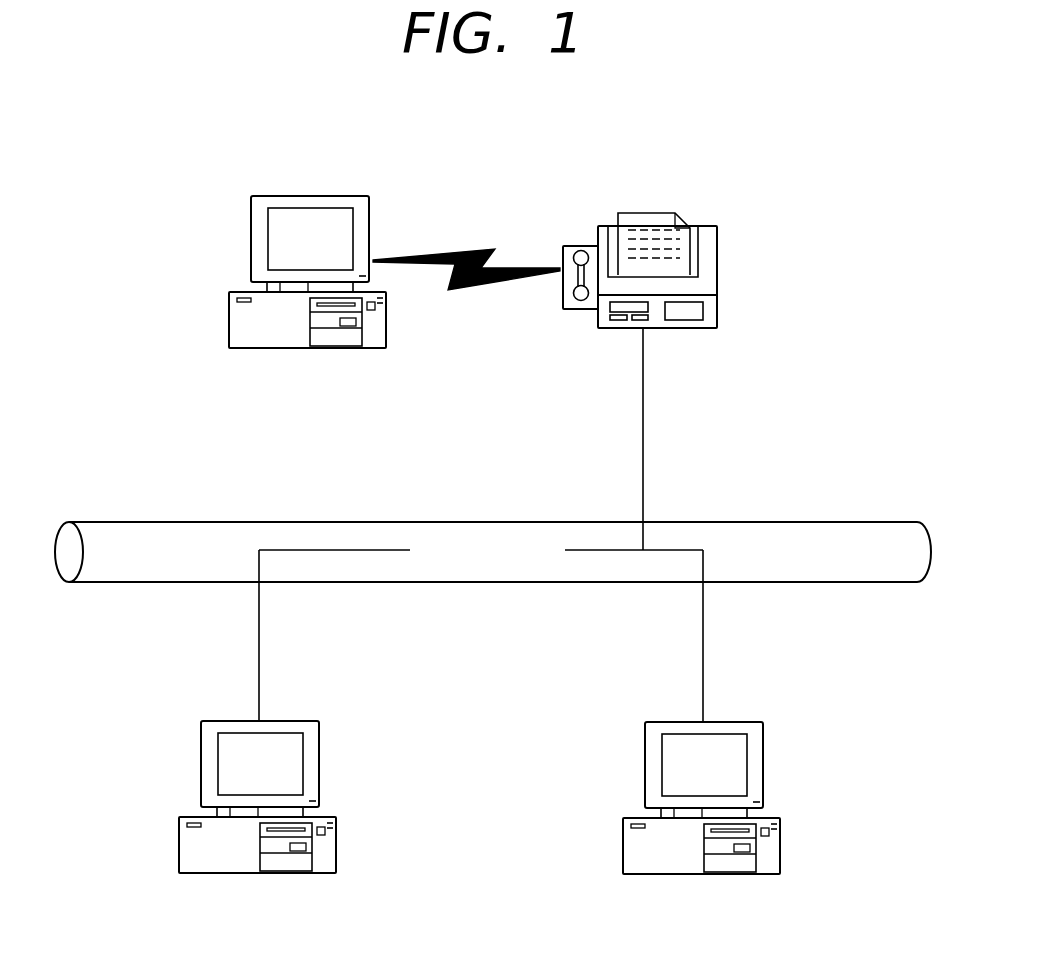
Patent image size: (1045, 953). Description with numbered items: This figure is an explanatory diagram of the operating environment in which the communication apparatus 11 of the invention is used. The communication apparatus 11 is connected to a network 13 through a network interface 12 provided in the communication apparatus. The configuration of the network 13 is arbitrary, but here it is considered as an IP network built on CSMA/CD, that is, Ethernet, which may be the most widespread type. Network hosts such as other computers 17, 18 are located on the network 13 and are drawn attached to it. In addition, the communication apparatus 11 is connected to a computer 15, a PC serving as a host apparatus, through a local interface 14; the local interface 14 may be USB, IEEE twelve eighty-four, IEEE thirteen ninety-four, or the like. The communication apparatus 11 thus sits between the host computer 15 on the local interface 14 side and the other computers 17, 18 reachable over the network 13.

The communication apparatus 11 is at (655, 213).
The network interface 12 is at (645, 424).
The network 13 is at (497, 523).
The local interface 14 is at (451, 250).
The computer (PC) 15 is at (313, 196).
The computer 17 is at (250, 875).
The computer 18 is at (696, 875).